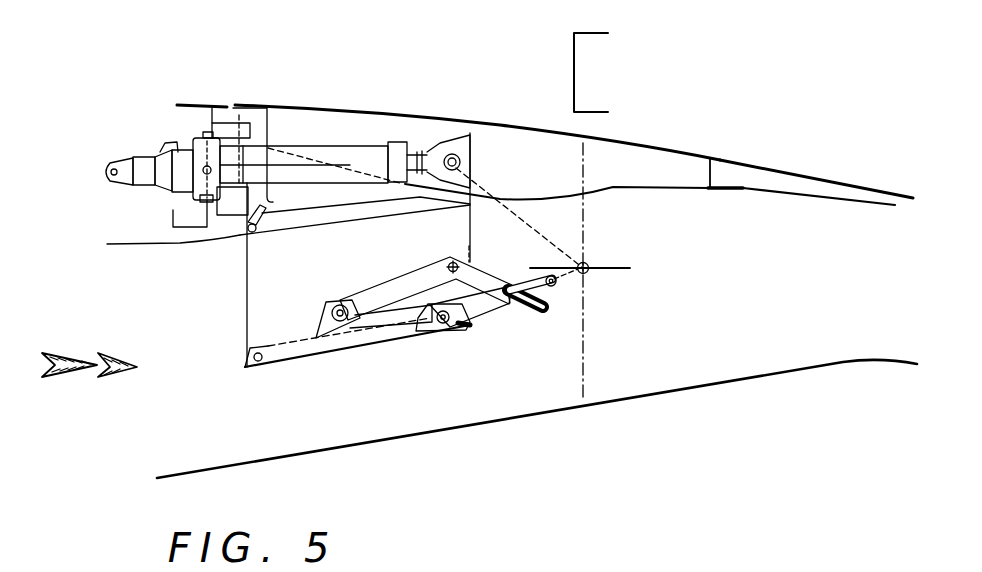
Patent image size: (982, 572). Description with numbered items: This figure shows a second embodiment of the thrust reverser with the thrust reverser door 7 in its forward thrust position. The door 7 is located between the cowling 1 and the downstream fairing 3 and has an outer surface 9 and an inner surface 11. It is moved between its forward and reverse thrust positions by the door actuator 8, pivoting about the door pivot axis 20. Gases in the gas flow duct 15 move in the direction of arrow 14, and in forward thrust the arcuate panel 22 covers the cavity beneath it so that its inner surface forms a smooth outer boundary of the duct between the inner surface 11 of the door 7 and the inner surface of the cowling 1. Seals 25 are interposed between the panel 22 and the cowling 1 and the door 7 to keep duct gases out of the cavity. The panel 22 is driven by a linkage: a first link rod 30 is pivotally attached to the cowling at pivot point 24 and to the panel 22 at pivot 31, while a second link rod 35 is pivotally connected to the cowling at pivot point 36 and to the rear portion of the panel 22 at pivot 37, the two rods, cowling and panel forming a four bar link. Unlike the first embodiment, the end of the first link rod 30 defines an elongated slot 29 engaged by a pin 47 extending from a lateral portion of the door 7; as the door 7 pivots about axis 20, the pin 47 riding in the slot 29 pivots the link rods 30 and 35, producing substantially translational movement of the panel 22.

The cowling 1 is at (195, 104).
The downstream fairing 3 is at (817, 178).
The thrust reverser door 7 is at (515, 152).
The door actuator 8 is at (332, 157).
The outer surface 9 is at (667, 148).
The inner surface 11 is at (613, 187).
The arrow 14 is at (89, 386).
The gas flow duct 15 is at (767, 228).
The door pivot axis 20 is at (590, 263).
The panel 22 is at (302, 212).
The pivot point 24 is at (453, 263).
The seals 25 is at (252, 225).
The elongated slot 29 is at (513, 285).
The first link rod 30 is at (398, 292).
The pivot 31 is at (337, 303).
The second link rod 35 is at (477, 305).
The pivot point 36 is at (555, 285).
The pivot 37 is at (422, 331).
The pin 47 is at (527, 312).